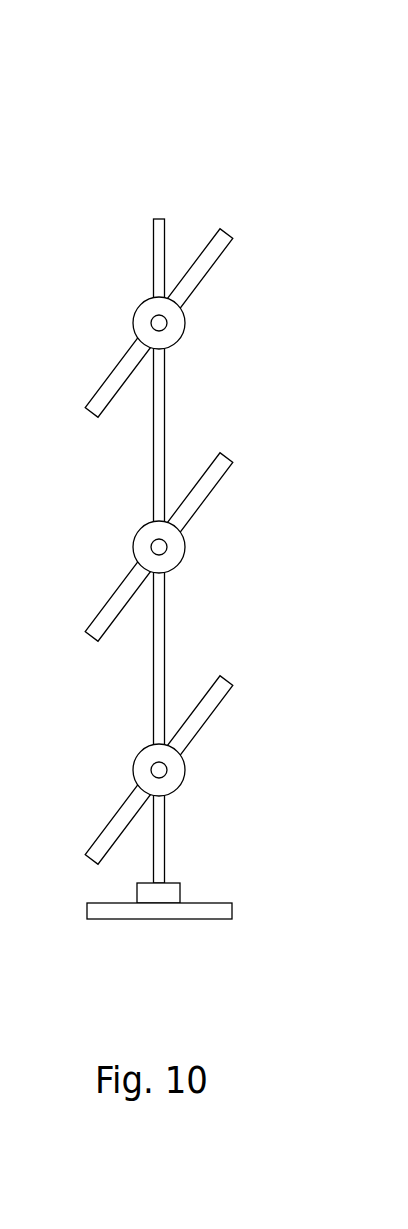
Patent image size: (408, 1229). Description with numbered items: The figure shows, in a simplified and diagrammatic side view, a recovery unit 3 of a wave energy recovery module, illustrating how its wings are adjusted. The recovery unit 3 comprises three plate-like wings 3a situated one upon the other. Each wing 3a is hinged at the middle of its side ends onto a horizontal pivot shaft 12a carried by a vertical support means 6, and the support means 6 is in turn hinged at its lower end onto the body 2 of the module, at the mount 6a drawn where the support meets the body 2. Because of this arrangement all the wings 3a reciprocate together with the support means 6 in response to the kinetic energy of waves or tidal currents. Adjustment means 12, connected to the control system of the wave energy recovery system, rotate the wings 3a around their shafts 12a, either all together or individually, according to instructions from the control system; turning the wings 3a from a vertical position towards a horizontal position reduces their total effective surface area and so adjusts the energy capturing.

The recovery unit 3 is at (172, 108).
The wing 3a is at (226, 230).
The vertical support means 6 is at (157, 492).
The post mount 6a is at (143, 890).
The body 2 is at (208, 908).
The adjustment means 12 is at (133, 321).
The pivot shaft 12a is at (160, 326).